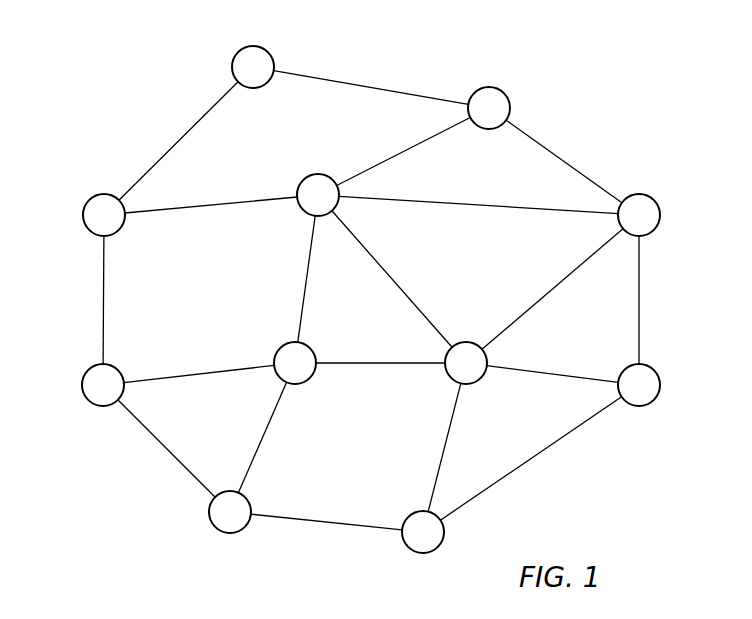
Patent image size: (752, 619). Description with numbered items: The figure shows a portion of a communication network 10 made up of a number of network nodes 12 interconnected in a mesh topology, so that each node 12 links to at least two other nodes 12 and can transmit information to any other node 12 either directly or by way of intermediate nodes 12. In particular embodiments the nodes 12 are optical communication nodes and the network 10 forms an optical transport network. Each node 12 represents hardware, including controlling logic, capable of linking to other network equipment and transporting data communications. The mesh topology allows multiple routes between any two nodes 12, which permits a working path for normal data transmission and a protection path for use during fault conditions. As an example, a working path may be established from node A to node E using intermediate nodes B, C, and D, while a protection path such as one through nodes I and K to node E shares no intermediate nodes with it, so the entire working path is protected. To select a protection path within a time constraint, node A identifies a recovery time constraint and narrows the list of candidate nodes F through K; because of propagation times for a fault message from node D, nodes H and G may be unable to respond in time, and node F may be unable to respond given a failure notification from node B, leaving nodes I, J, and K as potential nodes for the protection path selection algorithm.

The communication network 10 is at (76, 56).
The network node 12 is at (371, 301).
The node A is at (82, 176).
The node B is at (232, 26).
The node C is at (489, 108).
The node D is at (662, 176).
The node E is at (639, 385).
The node F is at (402, 573).
The node G is at (230, 512).
The node H is at (103, 385).
The node I is at (297, 156).
The node J is at (295, 363).
The node K is at (466, 363).